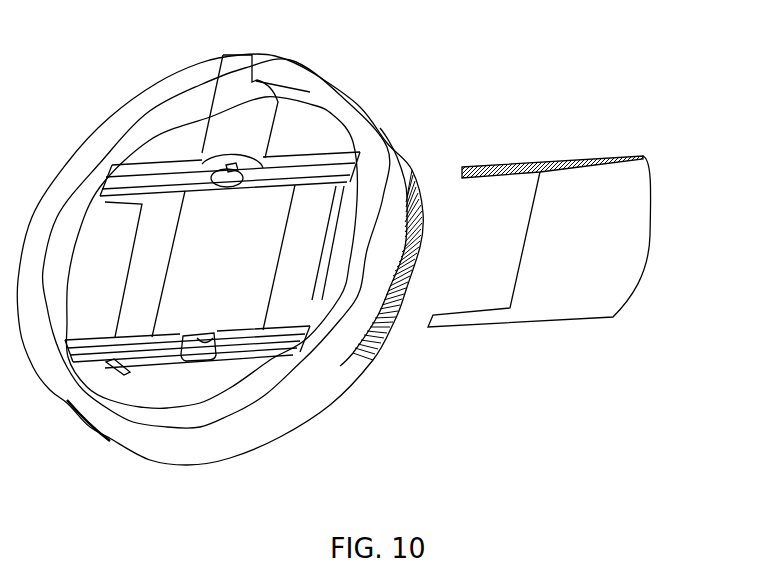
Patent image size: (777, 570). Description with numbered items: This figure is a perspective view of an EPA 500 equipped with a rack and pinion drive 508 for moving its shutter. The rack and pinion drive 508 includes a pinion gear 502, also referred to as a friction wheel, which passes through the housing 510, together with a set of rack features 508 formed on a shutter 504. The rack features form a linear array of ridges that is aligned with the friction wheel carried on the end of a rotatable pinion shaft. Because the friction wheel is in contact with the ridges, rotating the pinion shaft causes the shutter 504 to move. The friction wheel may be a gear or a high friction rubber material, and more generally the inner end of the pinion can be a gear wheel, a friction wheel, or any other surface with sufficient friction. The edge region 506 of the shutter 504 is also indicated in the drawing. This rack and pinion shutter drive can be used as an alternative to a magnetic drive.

The EPA 500 is at (388, 93).
The pinion gear 502 is at (229, 186).
The shutter 504 is at (654, 139).
The panel edge 506 is at (534, 151).
The rack and pinion drive 508 is at (176, 154).
The housing 510 is at (385, 146).